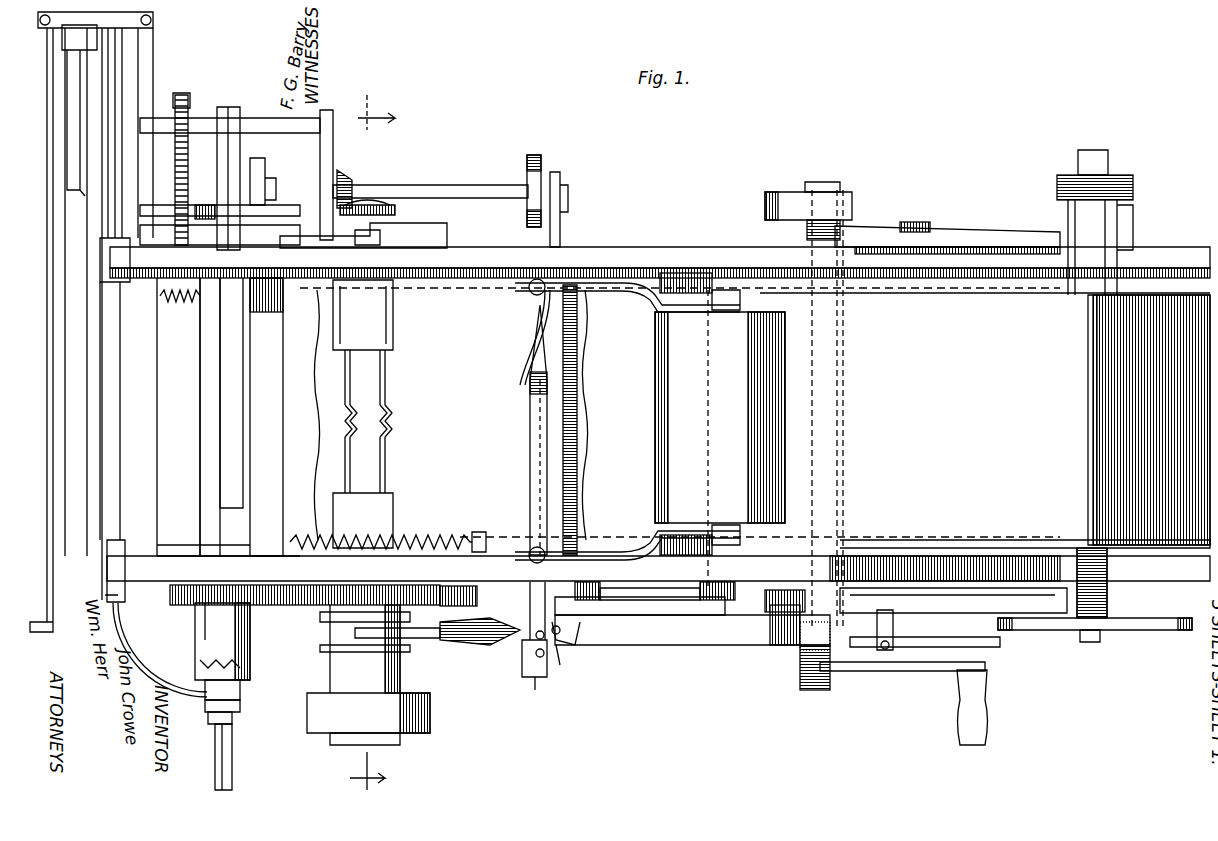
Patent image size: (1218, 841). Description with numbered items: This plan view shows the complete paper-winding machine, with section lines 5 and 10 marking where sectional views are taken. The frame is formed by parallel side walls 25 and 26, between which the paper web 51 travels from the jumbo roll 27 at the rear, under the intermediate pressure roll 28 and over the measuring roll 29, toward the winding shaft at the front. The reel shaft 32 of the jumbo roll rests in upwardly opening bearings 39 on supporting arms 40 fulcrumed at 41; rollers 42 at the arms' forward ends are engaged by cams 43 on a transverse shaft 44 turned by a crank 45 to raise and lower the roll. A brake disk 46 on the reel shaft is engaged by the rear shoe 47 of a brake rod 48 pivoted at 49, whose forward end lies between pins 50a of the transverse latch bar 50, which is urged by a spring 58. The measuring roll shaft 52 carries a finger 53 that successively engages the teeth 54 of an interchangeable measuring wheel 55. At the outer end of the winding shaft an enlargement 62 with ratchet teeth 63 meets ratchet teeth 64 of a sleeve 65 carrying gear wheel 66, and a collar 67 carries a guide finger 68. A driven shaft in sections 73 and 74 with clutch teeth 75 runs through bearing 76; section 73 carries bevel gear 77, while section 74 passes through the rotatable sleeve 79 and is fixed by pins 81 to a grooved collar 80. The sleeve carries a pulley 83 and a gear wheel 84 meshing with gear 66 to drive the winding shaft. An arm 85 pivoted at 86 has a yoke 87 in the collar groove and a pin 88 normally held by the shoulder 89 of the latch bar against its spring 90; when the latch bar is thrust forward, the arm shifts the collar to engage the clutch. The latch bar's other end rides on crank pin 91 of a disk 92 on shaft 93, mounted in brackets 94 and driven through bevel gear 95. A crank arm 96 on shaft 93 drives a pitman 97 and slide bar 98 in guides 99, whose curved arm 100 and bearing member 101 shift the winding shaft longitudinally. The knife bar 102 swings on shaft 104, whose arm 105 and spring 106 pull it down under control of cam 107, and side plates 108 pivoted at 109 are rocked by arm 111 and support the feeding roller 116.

The frame rod 5 is at (220, 95).
The section line 10 is at (371, 418).
The side wall 25 is at (650, 248).
The side wall 26 is at (886, 556).
The jumbo roll 27 is at (1025, 421).
The intermediate pressure roll 28 is at (720, 417).
The measuring roll 29 is at (578, 356).
The reel shaft 32 is at (1090, 645).
The upwardly opening bearings 39 is at (1133, 238).
The side supporting arms 40 is at (1000, 228).
The fulcrum 41 is at (920, 222).
The rollers 42 is at (852, 206).
The cams 43 is at (772, 192).
The transverse shaft 44 is at (815, 690).
The crank 45 is at (930, 672).
The brake disk 46 is at (1172, 631).
The rear shoe 47 is at (990, 666).
The brake rod 48 is at (726, 648).
The pivot 49 is at (884, 656).
The latch bar 50 is at (530, 478).
The vertically extending pins 50a is at (530, 660).
The paper web 51 is at (302, 426).
The measuring roll shaft 52 is at (640, 560).
The projecting finger 53 is at (680, 586).
The teeth 54 is at (770, 604).
The measuring wheel 55 is at (712, 607).
The latch bar spring 58 is at (540, 318).
The enlargement 62 is at (240, 690).
The ratchet teeth 63 is at (246, 668).
The ratchet teeth 64 is at (250, 645).
The sleeve 65 is at (200, 640).
The gear wheel 66 is at (252, 604).
The collar 67 is at (212, 722).
The guide finger 68 is at (215, 760).
The driven shaft section 73 is at (386, 372).
The driven shaft section 74 is at (386, 466).
The clutch teeth 75 is at (386, 430).
The bearing 76 is at (396, 229).
The bevel gear 77 is at (384, 202).
The rotatable sleeve 79 is at (386, 522).
The annularly grooved collar 80 is at (400, 650).
The pins 81 is at (362, 642).
The pulley 83 is at (425, 732).
The gear wheel 84 is at (478, 596).
The arm 85 is at (572, 646).
The pivot 86 is at (840, 545).
The yoke 87 is at (416, 641).
The pin 88 is at (560, 666).
The shoulder 89 is at (537, 680).
The spring 90 is at (805, 622).
The crank pin 91 is at (555, 185).
The disk 92 is at (533, 155).
The shaft 93 is at (478, 185).
The brackets 94 is at (334, 160).
The bevel gear 95 is at (353, 182).
The crank arm 96 is at (92, 95).
The pitman 97 is at (118, 195).
The slide bar 98 is at (122, 480).
The guides 99 is at (122, 288).
The curved arm 100 is at (135, 642).
The bearing member 101 is at (238, 706).
The knife bar 102 is at (230, 335).
The shaft 104 is at (241, 158).
The arm 105 is at (205, 100).
The spring 106 is at (178, 101).
The cam 107 is at (262, 182).
The side plates 108 is at (390, 289).
The pivot 109 is at (266, 497).
The arm 111 is at (290, 284).
The roller 116 is at (212, 404).